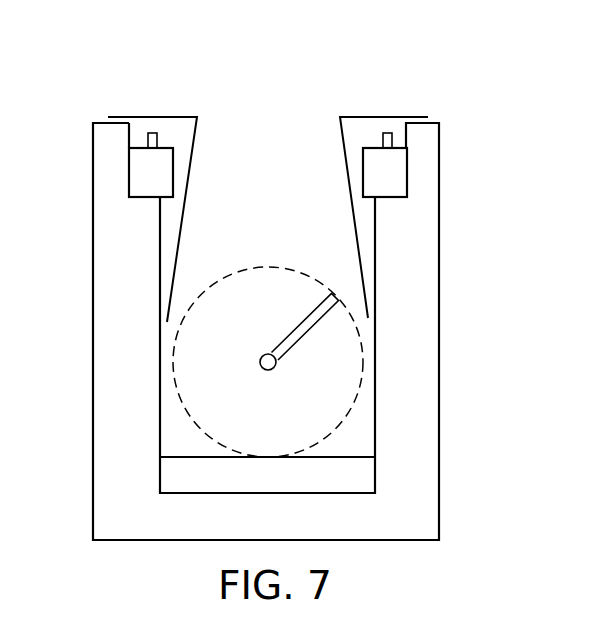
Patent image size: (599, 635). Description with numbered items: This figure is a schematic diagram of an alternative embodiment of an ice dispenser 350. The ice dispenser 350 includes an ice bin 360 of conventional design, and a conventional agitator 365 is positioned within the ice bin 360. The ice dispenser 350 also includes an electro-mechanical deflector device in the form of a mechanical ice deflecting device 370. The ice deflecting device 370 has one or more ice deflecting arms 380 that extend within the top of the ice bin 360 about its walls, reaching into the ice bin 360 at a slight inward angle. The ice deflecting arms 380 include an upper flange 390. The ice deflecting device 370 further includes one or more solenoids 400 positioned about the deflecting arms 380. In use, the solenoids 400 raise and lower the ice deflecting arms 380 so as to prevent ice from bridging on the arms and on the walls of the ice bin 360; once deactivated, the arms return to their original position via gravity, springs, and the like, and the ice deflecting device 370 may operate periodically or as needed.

The ice dispenser 350 is at (92, 67).
The ice bin 360 is at (93, 447).
The agitator 365 is at (305, 338).
The ice deflecting device 370 is at (410, 112).
The ice deflecting arms 380 is at (352, 213).
The upper flange 390 is at (360, 117).
The solenoids 400 is at (383, 198).